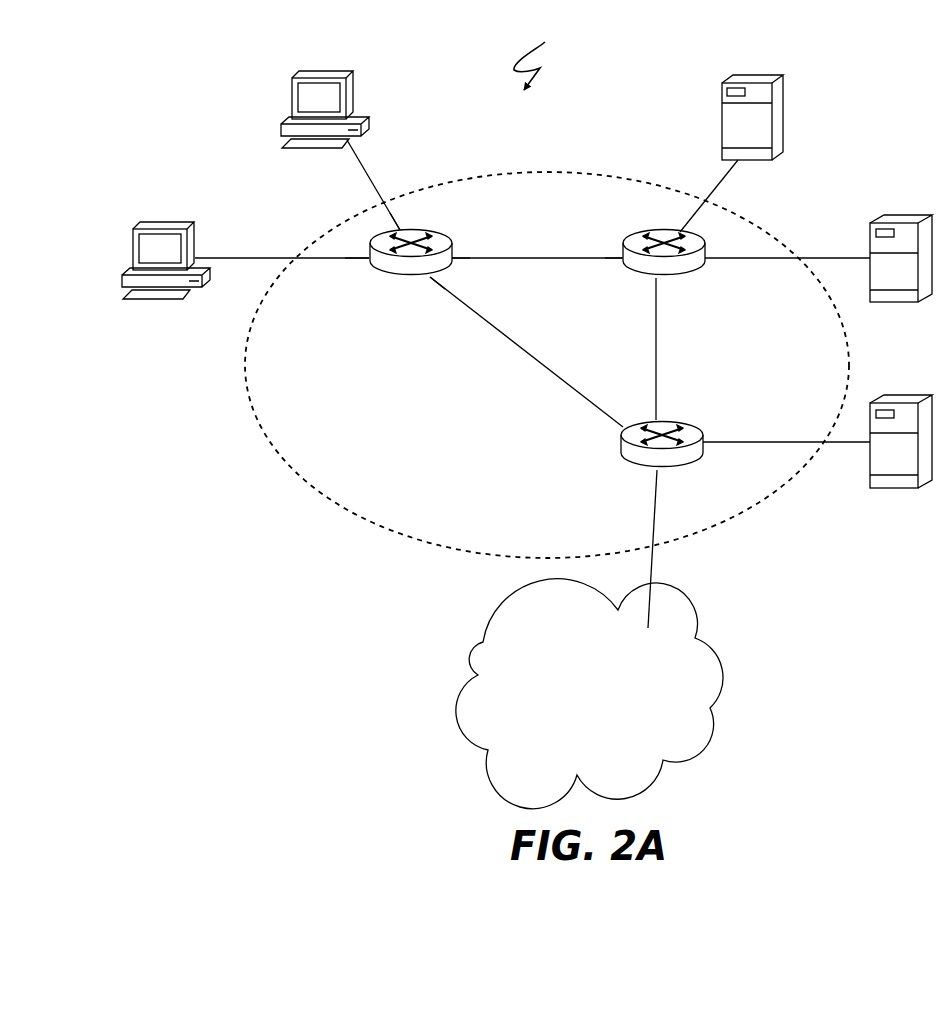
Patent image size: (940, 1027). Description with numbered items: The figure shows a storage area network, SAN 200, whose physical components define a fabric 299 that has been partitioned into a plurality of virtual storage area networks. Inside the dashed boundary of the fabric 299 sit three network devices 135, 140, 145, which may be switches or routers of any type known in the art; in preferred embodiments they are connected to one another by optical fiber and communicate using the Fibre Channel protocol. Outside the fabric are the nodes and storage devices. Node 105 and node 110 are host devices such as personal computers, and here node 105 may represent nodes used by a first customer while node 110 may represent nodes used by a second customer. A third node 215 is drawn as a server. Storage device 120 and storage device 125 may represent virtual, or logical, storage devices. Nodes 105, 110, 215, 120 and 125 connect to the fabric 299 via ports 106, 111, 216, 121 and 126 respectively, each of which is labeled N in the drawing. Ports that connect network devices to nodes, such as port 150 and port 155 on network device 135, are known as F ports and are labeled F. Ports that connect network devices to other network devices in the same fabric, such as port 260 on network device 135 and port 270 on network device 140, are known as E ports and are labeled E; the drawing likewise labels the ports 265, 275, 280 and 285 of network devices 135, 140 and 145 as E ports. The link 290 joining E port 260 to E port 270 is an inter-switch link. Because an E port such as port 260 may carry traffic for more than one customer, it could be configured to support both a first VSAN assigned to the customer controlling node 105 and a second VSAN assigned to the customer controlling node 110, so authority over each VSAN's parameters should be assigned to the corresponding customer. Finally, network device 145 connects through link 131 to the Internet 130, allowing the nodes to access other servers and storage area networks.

The SAN 200 is at (541, 52).
The fabric 299 is at (343, 481).
The node 105 is at (133, 240).
The port 106 is at (228, 259).
The node 110 is at (292, 97).
The port 111 is at (360, 165).
The network device 135 is at (375, 275).
The F port 150 is at (334, 259).
The F port 155 is at (390, 220).
The router interface E 265 is at (435, 282).
The E port 260 is at (466, 259).
The link 290 is at (540, 258).
The network device 140 is at (626, 273).
The E port 270 is at (620, 246).
The router interface E 275 is at (658, 283).
The node 215 is at (722, 102).
The port 216 is at (739, 168).
The storage device 120 is at (904, 216).
The port 121 is at (858, 259).
The network device 145 is at (638, 460).
The router interface E 280 is at (655, 421).
The router interface E 285 is at (614, 440).
The storage device 125 is at (906, 396).
The port 126 is at (858, 441).
The network link to Internet 131 is at (652, 588).
The Internet 130 is at (500, 648).